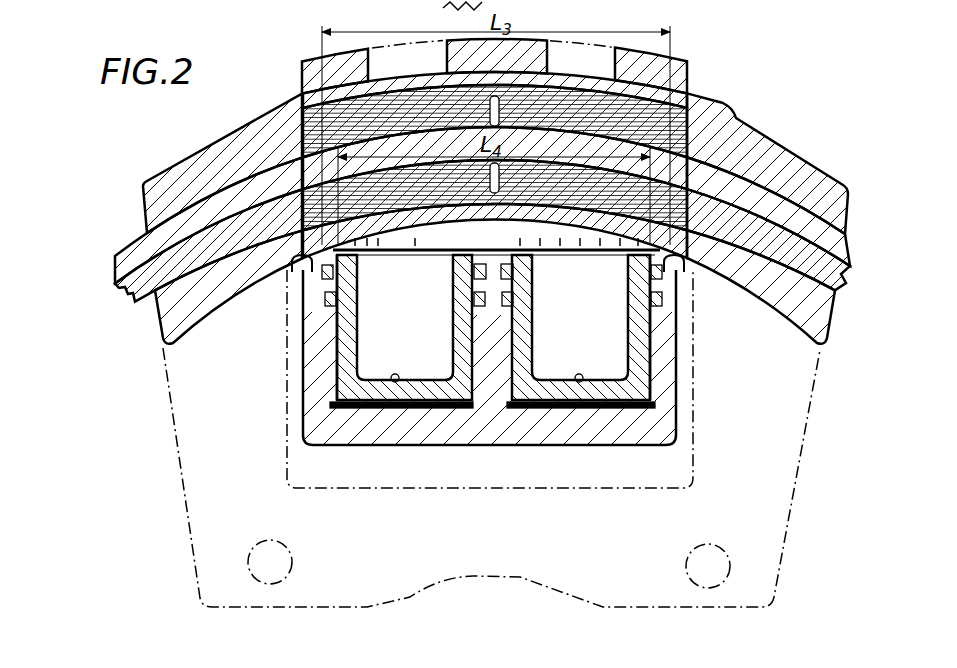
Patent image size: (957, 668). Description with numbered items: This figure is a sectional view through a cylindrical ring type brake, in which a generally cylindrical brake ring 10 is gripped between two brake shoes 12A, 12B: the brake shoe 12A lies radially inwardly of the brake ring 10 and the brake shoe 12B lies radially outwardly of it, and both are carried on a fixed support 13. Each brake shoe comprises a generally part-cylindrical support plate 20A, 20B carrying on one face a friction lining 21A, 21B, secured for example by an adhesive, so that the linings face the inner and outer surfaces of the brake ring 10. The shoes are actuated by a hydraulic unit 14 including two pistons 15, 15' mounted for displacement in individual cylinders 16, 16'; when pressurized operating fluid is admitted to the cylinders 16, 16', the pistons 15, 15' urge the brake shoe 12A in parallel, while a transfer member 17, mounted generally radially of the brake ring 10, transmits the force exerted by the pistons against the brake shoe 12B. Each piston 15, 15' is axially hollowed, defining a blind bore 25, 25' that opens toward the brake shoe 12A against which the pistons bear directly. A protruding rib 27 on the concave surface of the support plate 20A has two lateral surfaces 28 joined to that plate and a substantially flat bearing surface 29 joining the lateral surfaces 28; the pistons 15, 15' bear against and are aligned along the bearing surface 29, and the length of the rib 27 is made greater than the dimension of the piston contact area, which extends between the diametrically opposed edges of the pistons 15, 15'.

The cylindrical brake ring 10 is at (130, 250).
The brake shoe 12A is at (501, 274).
The brake shoe 12B is at (697, 113).
The fixed support 13 is at (830, 348).
The hydraulic unit 14 is at (686, 377).
The piston 15 is at (282, 327).
The piston 15' is at (712, 327).
The cylinder 16 is at (350, 395).
The cylinder 16' is at (624, 399).
The transfer member 17 is at (284, 441).
The support plate 20A is at (597, 222).
The support plate 20B is at (303, 78).
The friction lining 21A is at (395, 206).
The friction lining 21B is at (302, 125).
The blind bore 25 is at (376, 449).
The blind bore 25' is at (576, 450).
The protruding rib 27 is at (322, 279).
The lateral surfaces 28 is at (496, 240).
The bearing surface 29 is at (364, 259).